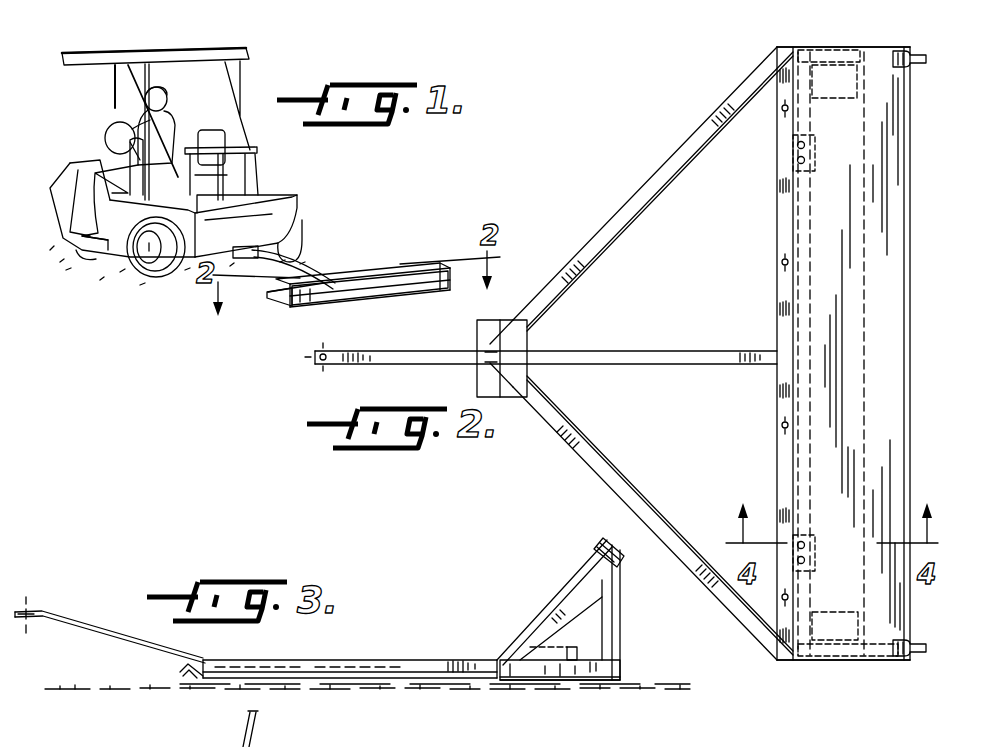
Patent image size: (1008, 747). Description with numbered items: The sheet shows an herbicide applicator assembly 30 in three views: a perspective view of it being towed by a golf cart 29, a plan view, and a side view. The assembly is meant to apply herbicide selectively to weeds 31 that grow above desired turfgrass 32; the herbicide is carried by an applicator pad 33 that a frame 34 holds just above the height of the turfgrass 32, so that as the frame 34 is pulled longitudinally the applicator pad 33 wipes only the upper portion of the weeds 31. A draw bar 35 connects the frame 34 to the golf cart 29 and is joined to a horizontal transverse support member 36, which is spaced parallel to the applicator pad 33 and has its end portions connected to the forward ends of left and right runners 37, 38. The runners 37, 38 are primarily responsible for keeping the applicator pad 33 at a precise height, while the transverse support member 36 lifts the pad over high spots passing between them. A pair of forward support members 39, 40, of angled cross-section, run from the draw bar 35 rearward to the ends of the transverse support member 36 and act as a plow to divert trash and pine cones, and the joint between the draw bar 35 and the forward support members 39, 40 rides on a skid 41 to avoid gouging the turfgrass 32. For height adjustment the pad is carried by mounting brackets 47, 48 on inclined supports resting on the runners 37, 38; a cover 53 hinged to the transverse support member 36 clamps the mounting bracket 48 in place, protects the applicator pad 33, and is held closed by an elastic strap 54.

In FIG. 1, the golf cart 29 is at (290, 161).
In FIG. 1, the herbicide applicator assembly 30 is at (395, 258).
In FIG. 2, the herbicide applicator assembly 30 is at (680, 118).
In FIG. 3, the herbicide applicator assembly 30 is at (484, 592).
In FIG. 3, the weeds 31 is at (158, 688).
In FIG. 3, the turfgrass 32 is at (116, 688).
In FIG. 1, the applicator pad 33 is at (357, 296).
In FIG. 2, the applicator pad 33 is at (790, 246).
In FIG. 3, the applicator pad 33 is at (598, 666).
In FIG. 3, the frame 34 is at (556, 688).
In FIG. 1, the draw bar 35 is at (281, 247).
In FIG. 2, the draw bar 35 is at (352, 367).
In FIG. 3, the draw bar 35 is at (78, 620).
In FIG. 2, the transverse support member 36 is at (779, 311).
In FIG. 2, the left runner 37 is at (800, 662).
In FIG. 2, the right runner 38 is at (802, 47).
In FIG. 2, the forward support member 39 is at (597, 448).
In FIG. 3, the forward support member 39 is at (356, 660).
In FIG. 2, the forward support member 40 is at (626, 212).
In FIG. 2, the skid 41 is at (477, 381).
In FIG. 3, the skid 41 is at (186, 680).
In FIG. 2, the mounting bracket 47 is at (870, 662).
In FIG. 2, the mounting bracket 48 is at (868, 47).
In FIG. 2, the cover 53 is at (818, 376).
In FIG. 2, the elastic strap 54 is at (916, 52).
In FIG. 3, the elastic strap 54 is at (610, 540).